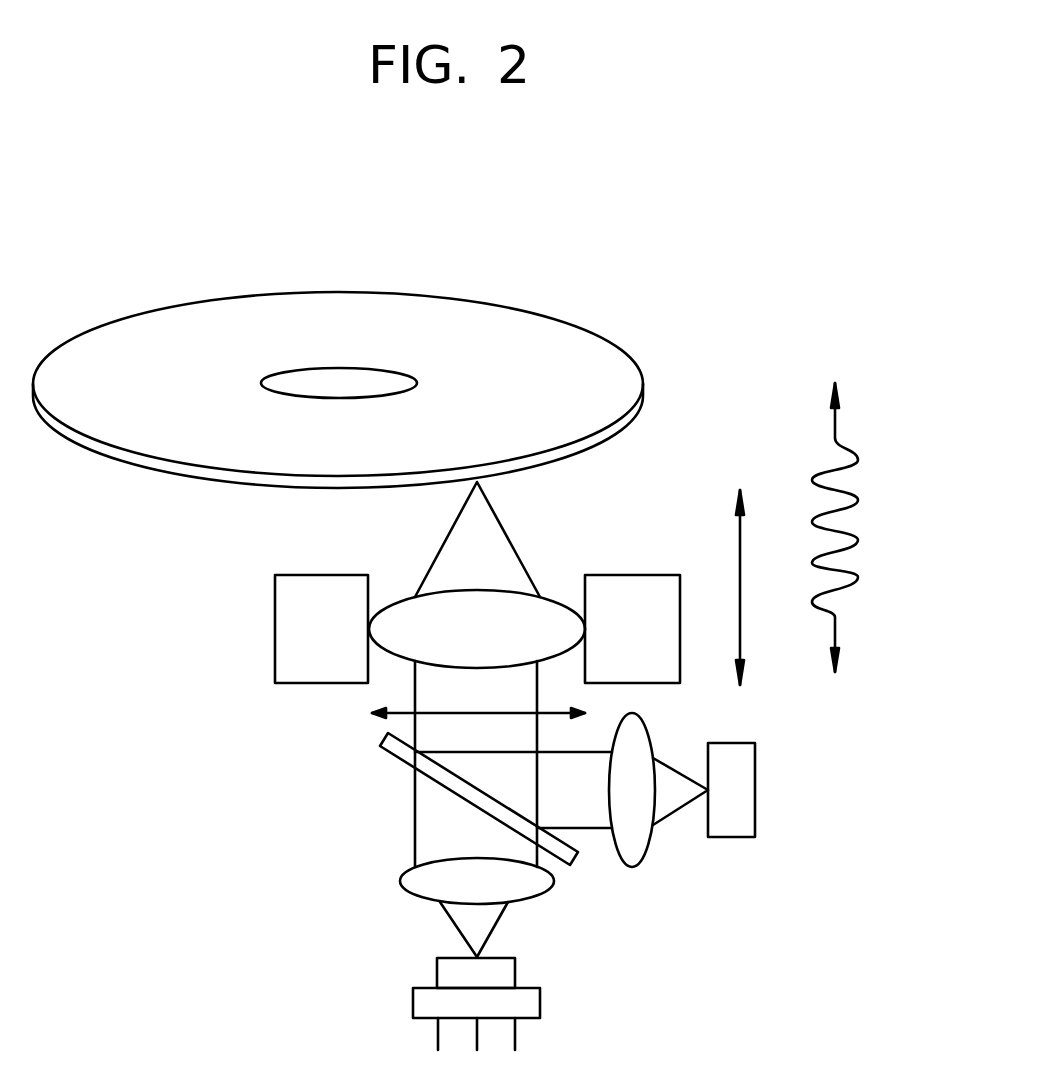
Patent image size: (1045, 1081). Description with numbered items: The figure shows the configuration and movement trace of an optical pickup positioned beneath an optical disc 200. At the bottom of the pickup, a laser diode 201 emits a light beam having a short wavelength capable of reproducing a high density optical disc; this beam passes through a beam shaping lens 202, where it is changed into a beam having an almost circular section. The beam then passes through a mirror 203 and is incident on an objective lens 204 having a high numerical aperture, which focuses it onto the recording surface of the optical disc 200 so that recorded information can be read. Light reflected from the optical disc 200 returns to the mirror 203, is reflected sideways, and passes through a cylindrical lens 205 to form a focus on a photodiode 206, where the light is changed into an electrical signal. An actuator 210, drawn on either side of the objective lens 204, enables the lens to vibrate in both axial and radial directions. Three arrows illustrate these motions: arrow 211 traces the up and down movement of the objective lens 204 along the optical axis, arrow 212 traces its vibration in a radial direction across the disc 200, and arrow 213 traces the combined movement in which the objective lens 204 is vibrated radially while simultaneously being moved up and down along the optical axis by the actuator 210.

The optical disc 200 is at (540, 315).
The laser diode 201 is at (413, 1005).
The beam shaping lens 202 is at (400, 878).
The mirror 203 is at (397, 758).
The objective lens 204 is at (558, 598).
The cylindrical lens 205 is at (632, 867).
The photodiode 206 is at (732, 837).
The actuator 210 is at (275, 628).
The arrow 211 is at (740, 488).
The arrow 212 is at (368, 713).
The arrow 213 is at (860, 533).